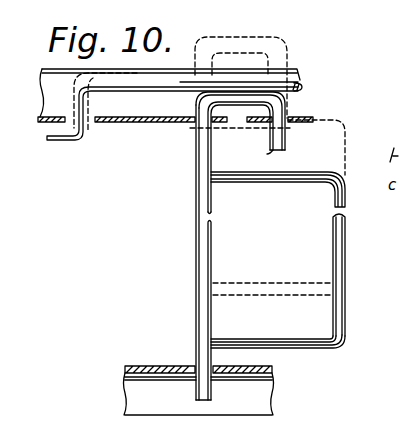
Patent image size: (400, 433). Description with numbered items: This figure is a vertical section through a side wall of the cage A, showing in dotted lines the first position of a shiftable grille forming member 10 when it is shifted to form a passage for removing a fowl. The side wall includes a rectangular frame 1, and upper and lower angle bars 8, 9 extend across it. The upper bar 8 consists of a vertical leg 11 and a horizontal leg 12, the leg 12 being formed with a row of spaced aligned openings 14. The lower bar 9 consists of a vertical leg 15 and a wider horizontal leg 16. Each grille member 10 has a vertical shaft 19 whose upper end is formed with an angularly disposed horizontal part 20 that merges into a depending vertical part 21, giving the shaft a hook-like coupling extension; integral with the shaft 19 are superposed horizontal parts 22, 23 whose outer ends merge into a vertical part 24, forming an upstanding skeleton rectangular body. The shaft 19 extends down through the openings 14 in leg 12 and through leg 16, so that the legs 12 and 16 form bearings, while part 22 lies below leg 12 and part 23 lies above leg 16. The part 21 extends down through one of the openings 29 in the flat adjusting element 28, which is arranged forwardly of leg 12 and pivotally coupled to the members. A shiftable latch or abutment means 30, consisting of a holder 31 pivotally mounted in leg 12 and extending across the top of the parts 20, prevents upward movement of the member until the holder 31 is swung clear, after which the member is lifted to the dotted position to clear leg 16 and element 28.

The rectangular frame 1 is at (352, 188).
The upper angle bar 8 is at (131, 127).
The lower angle bar 9 is at (158, 343).
The shiftable grille forming member 10 is at (350, 233).
The vertical leg of bar 8 11 is at (53, 105).
The horizontal leg of bar 8 12 is at (118, 123).
The openings in leg 12 14 is at (192, 124).
The vertical leg of bar 9 15 is at (257, 395).
The horizontal leg of bar 9 16 is at (133, 366).
The vertical shaft 19 is at (205, 258).
The horizontal part 20 is at (237, 104).
The depending vertical part 21 is at (279, 147).
The upper horizontal part 22 is at (276, 183).
The lower horizontal part 23 is at (262, 340).
The vertical part 24 is at (336, 247).
The adjusting element 28 is at (318, 119).
The openings in element 28 29 is at (299, 86).
The shiftable latch or abutment means 30 is at (327, 52).
The holder 31 is at (177, 88).
The cage A is at (216, 203).